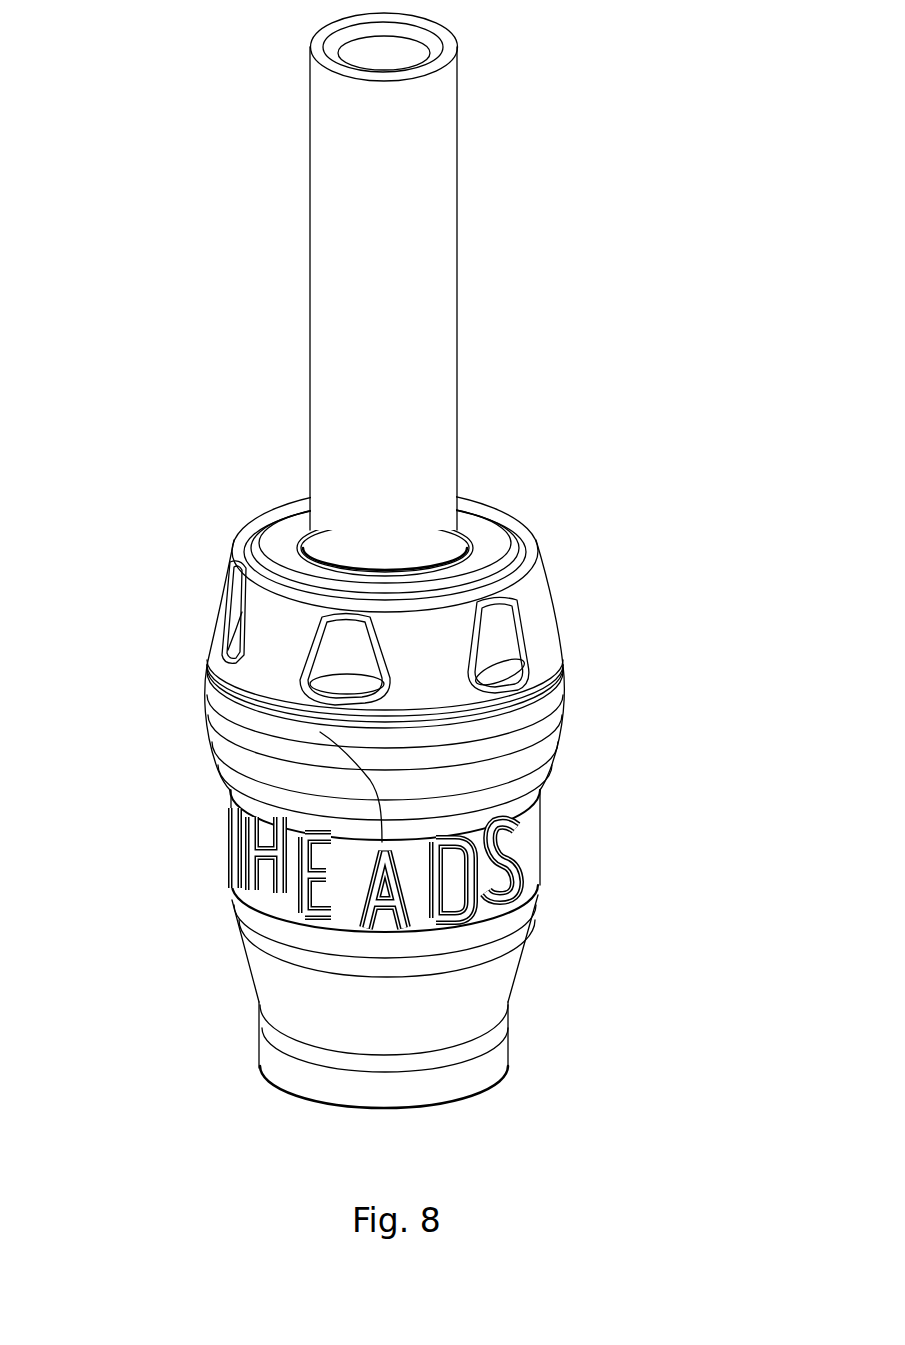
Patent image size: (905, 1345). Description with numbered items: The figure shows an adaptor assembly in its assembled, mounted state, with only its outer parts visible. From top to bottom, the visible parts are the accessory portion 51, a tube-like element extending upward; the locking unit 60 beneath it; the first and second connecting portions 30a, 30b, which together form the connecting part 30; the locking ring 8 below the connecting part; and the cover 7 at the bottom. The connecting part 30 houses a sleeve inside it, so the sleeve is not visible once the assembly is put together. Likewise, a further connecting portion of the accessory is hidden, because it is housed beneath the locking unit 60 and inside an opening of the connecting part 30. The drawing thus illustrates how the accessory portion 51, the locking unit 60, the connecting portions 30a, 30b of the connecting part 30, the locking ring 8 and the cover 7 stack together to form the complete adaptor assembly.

The accessory portion 51 is at (457, 252).
The locking unit 60 is at (552, 613).
The connecting part 30 is at (566, 775).
The first connecting portion 30a is at (563, 733).
The second connecting portion 30b is at (212, 758).
The locking ring 8 is at (540, 838).
The cover 7 is at (520, 970).